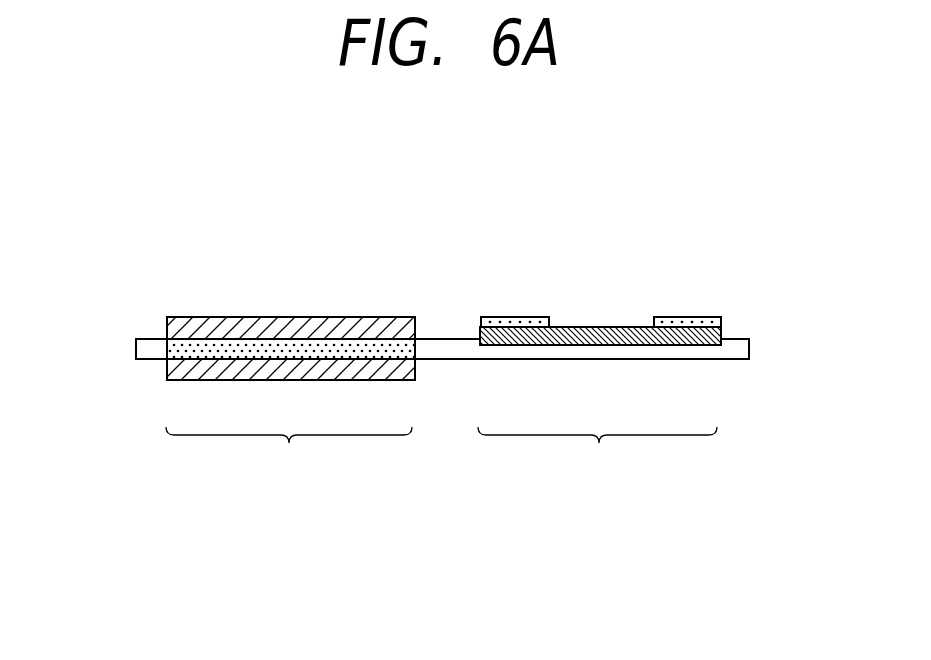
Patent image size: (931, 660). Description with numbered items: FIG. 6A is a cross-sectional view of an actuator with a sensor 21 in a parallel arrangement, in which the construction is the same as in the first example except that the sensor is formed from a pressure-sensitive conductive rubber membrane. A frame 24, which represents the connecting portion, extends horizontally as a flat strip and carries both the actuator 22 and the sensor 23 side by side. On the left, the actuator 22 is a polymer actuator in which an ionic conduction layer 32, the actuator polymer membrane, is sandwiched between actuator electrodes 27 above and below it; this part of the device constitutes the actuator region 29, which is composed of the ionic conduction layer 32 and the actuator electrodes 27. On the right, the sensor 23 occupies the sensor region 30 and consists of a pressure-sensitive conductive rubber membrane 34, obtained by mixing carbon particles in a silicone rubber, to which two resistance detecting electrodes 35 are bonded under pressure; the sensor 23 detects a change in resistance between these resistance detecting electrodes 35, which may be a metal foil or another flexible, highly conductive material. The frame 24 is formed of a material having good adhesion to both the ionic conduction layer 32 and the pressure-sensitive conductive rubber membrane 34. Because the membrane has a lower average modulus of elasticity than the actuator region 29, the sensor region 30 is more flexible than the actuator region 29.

The actuator with a sensor 21 is at (150, 167).
The actuator 22 is at (172, 290).
The sensor 23 is at (733, 288).
The frame 24 is at (148, 355).
The actuator electrodes 27 is at (370, 368).
The actuator region 29 is at (289, 454).
The sensor region 30 is at (597, 454).
The ionic conduction layer 32 is at (222, 347).
The pressure-sensitive conductive rubber membrane 34 is at (600, 333).
The resistance detecting electrodes 35 is at (512, 325).